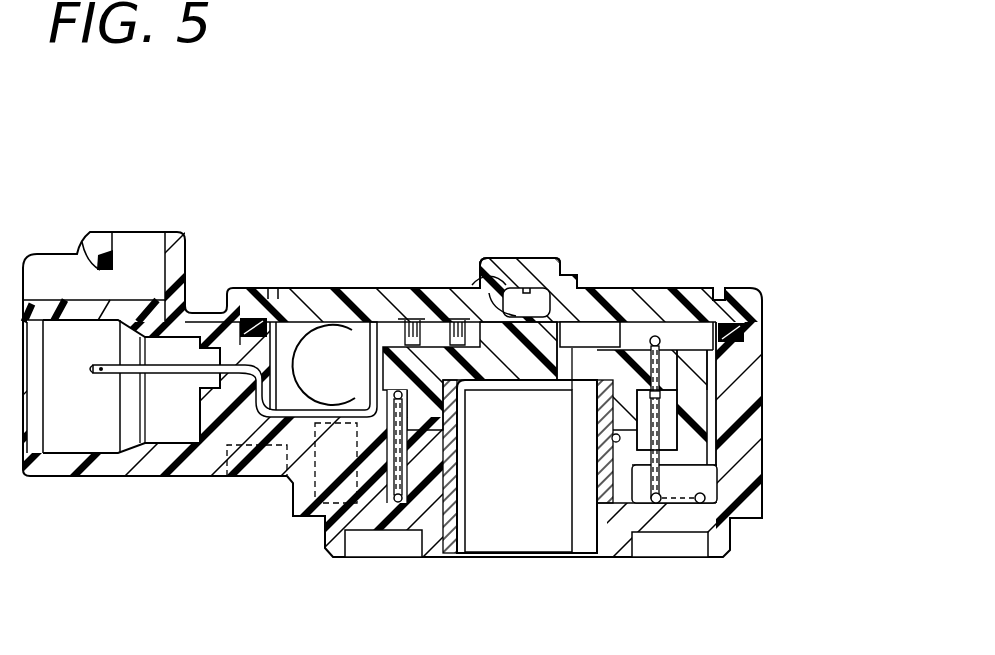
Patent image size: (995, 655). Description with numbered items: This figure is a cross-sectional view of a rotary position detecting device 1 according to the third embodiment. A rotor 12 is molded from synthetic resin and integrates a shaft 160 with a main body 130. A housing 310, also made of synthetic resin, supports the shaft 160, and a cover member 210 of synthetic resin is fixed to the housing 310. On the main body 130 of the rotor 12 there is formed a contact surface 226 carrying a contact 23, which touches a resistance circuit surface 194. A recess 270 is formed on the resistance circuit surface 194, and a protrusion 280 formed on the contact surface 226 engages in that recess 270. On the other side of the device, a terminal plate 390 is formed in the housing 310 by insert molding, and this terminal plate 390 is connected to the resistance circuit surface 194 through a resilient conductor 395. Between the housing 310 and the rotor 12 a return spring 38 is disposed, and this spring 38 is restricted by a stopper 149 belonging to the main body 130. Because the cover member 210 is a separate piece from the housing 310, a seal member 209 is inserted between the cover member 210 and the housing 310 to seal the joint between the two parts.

The pressure sensor 1 is at (444, 110).
The rotor 12 is at (626, 335).
The contact 23 is at (430, 300).
The return spring 38 is at (692, 418).
The main body 130 is at (682, 378).
The stopper 149 is at (613, 495).
The shaft 160 is at (455, 515).
The resistance circuit surface 194 is at (378, 300).
The seal member 209 is at (745, 328).
The cover member 210 is at (337, 278).
The contact surface 226 is at (587, 326).
The recess 270 is at (545, 314).
The protrusion 280 is at (478, 292).
The housing 310 is at (772, 455).
The terminal plate 390 is at (92, 368).
The resilient conductor 395 is at (290, 300).